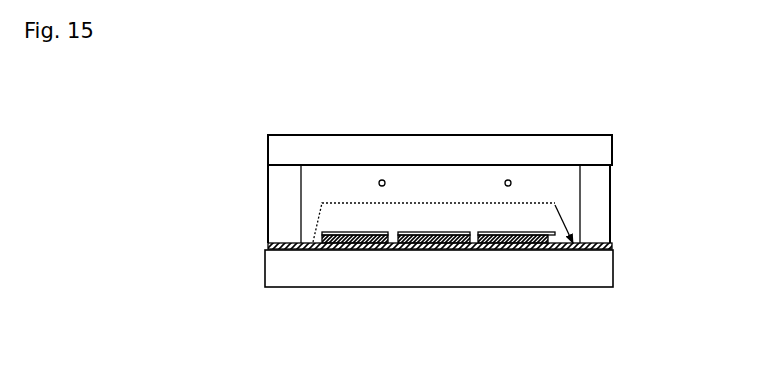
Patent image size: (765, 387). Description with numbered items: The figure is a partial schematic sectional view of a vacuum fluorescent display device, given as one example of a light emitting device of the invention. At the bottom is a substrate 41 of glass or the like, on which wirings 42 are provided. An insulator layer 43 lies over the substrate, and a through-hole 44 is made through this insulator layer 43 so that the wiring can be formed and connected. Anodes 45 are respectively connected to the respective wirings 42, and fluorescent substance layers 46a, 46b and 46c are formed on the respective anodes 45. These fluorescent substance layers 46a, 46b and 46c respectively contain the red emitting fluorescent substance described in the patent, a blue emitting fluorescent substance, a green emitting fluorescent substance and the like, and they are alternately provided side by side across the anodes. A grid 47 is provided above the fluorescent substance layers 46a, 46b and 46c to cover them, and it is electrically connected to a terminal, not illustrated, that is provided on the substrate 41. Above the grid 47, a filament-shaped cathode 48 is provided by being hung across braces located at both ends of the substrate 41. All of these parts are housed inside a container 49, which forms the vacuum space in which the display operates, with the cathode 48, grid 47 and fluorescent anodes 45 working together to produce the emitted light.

The substrate 41 is at (302, 272).
The wiring 42 is at (353, 255).
The insulator layer 43 is at (393, 252).
The through-hole 44 is at (352, 243).
The anode 45 is at (462, 250).
The fluorescent substance layer 46a is at (370, 232).
The fluorescent substance layer 46b is at (430, 232).
The fluorescent substance layer 46c is at (508, 232).
The grid 47 is at (573, 252).
The filament-shaped cathode 48 is at (507, 180).
The container 49 is at (556, 136).